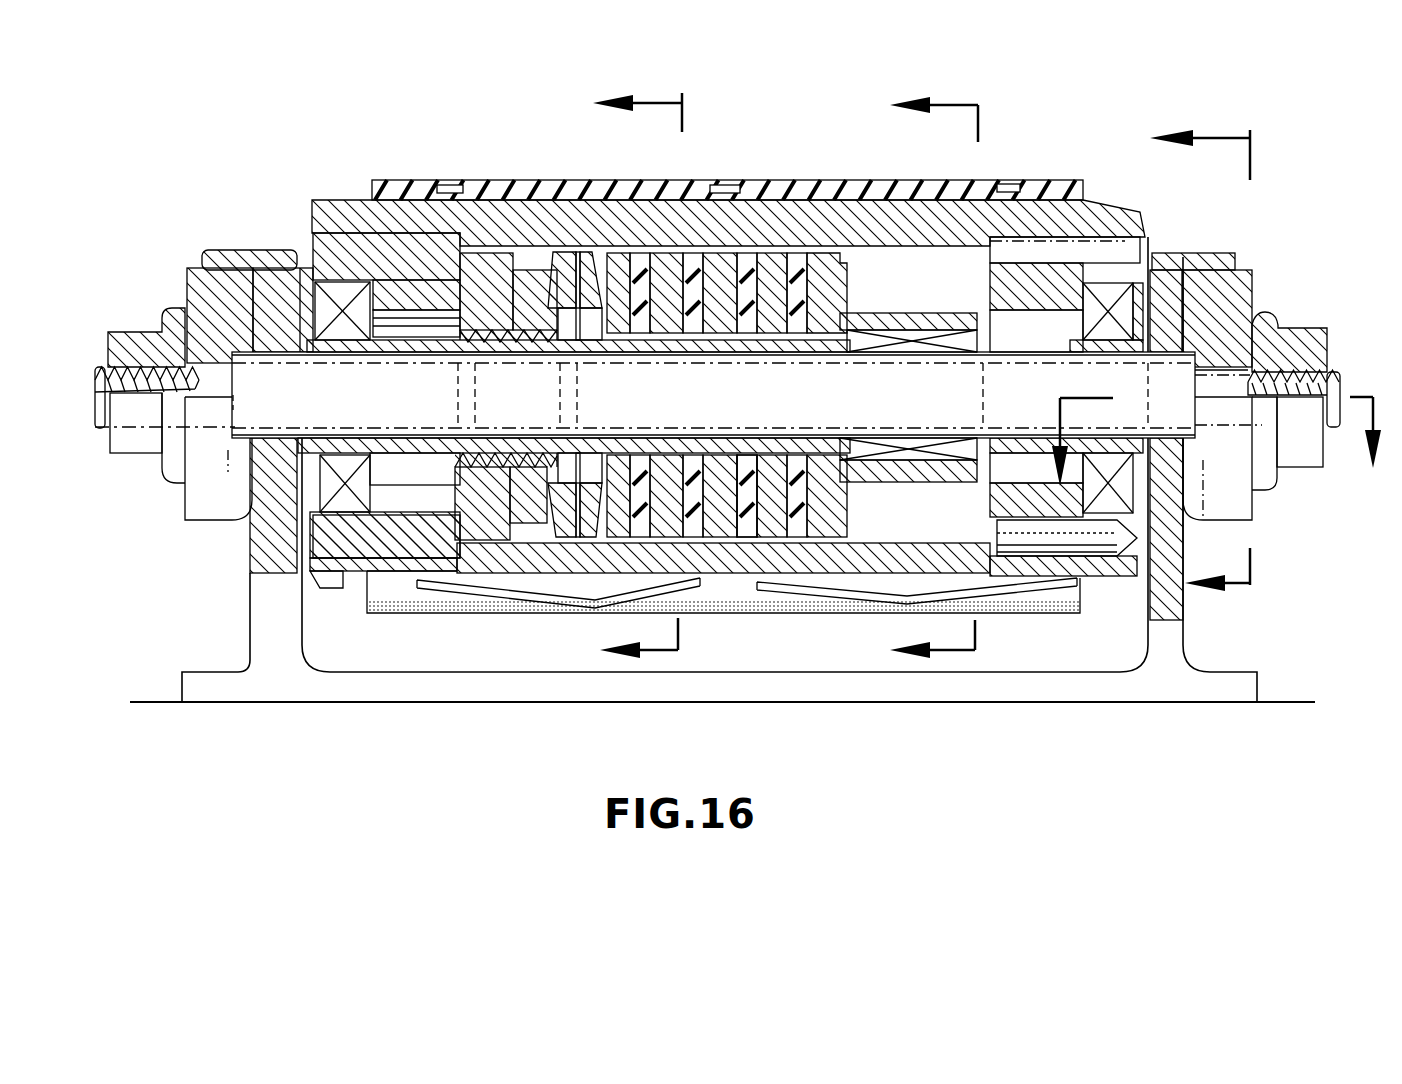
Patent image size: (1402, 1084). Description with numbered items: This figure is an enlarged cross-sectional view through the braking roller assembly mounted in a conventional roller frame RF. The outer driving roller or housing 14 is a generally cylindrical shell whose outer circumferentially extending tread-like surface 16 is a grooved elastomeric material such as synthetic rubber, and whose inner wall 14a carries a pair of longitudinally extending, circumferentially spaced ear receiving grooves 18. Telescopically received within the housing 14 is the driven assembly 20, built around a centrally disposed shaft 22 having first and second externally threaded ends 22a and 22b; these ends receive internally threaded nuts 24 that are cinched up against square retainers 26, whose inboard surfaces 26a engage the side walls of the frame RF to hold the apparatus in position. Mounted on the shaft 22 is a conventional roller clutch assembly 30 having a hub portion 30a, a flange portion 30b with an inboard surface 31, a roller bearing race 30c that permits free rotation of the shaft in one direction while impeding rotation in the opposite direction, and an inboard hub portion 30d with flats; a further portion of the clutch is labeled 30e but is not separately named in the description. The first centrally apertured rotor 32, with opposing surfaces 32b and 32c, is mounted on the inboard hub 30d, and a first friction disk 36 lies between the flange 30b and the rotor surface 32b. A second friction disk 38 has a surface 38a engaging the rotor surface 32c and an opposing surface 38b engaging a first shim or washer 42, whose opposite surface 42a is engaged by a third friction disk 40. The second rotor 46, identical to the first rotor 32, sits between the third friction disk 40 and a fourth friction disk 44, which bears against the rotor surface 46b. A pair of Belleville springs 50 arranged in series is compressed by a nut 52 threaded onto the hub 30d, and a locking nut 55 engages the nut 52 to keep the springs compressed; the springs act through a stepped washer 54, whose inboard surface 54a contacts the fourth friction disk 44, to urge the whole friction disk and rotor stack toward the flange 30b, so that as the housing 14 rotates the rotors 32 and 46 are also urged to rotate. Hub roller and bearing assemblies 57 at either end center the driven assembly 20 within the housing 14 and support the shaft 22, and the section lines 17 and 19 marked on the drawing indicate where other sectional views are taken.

The housing 14 is at (328, 172).
The inner wall 14a is at (972, 547).
The tread like surface 16 is at (403, 190).
The section line 17 is at (657, 377).
The ear receiving grooves 18 is at (963, 428).
The section line 19 is at (1222, 362).
The driven assembly 20 is at (1212, 408).
The shaft 22 is at (713, 395).
The first externally threaded end 22a is at (120, 333).
The second externally threaded end 22b is at (1283, 368).
The internally threaded nuts 24 is at (122, 450).
The square retainers 26 is at (197, 497).
The inboard surfaces 26a is at (265, 270).
The roller clutch assembly 30 is at (905, 302).
The hub portion 30a is at (967, 318).
The flange portion 30b is at (843, 507).
The roller bearing race 30c is at (963, 452).
The inboard hub portion 30d is at (790, 345).
The threaded nut 30e is at (475, 474).
The inboard surface of flange 31 is at (848, 268).
The first rotor 32 is at (773, 537).
The rotor surface 32b is at (800, 470).
The rotor surface 32c is at (747, 540).
The first friction disk 36 is at (792, 272).
The second friction disk 38 is at (750, 272).
The disk surface 38a is at (767, 470).
The disk surface 38b is at (708, 282).
The third friction disk 40 is at (697, 270).
The first shim or washer 42 is at (720, 272).
The washer surface 42a is at (690, 470).
The fourth friction disk 44 is at (620, 270).
The second rotor 46 is at (664, 275).
The rotor surface 46b is at (735, 565).
The Belleville springs 50 is at (557, 532).
The nut 52 is at (526, 278).
The second stepped shim or washer 54 is at (616, 532).
The inboard surface of washer 54a is at (644, 336).
The locking nut 55 is at (480, 272).
The hub roller and bearing assemblies 57 is at (1097, 242).
The roller frame RF is at (1115, 688).